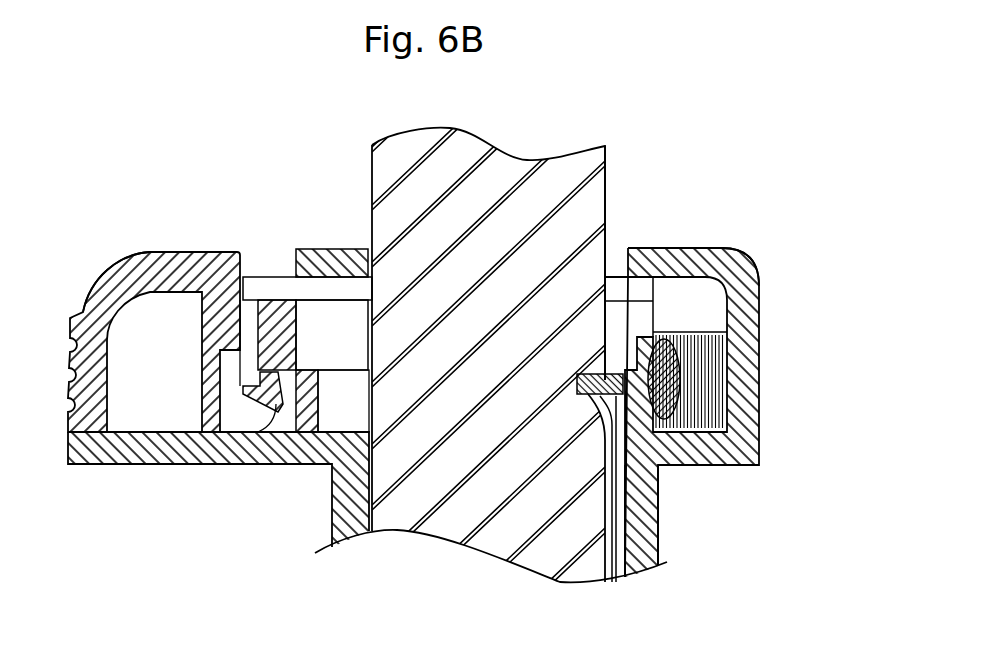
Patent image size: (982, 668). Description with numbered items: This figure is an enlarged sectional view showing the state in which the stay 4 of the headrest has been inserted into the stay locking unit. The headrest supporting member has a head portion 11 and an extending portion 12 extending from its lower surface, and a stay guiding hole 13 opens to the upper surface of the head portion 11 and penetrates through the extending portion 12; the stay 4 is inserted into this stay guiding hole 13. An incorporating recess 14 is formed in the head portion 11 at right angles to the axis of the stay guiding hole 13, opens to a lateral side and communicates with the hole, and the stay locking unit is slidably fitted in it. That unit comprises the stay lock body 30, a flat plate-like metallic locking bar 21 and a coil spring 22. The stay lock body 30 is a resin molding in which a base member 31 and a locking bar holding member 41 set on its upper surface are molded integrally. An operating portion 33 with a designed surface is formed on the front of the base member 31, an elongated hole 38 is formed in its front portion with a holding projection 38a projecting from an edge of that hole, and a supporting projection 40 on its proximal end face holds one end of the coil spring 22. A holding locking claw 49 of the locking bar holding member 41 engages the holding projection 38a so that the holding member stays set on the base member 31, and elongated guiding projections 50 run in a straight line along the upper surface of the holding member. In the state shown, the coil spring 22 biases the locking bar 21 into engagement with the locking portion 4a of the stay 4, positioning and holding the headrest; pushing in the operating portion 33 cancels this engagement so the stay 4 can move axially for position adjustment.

The stay 4 is at (447, 522).
The locking portion 4a is at (616, 565).
The head portion 11 is at (760, 392).
The extending portion 12 is at (658, 520).
The stay guiding hole 13 is at (614, 258).
The incorporating recess 14 is at (687, 250).
The locking bar 21 is at (655, 478).
The coil spring 22 is at (707, 330).
The stay lock body 30 is at (197, 232).
The base member 31 is at (337, 408).
The operating portion 33 is at (123, 272).
The elongated hole 38 is at (245, 408).
The holding projection 38a is at (253, 367).
The supporting projection 40 is at (690, 290).
The locking bar holding member 41 is at (340, 330).
The holding locking claw 49 is at (252, 463).
The elongated guiding projections 50 is at (283, 288).